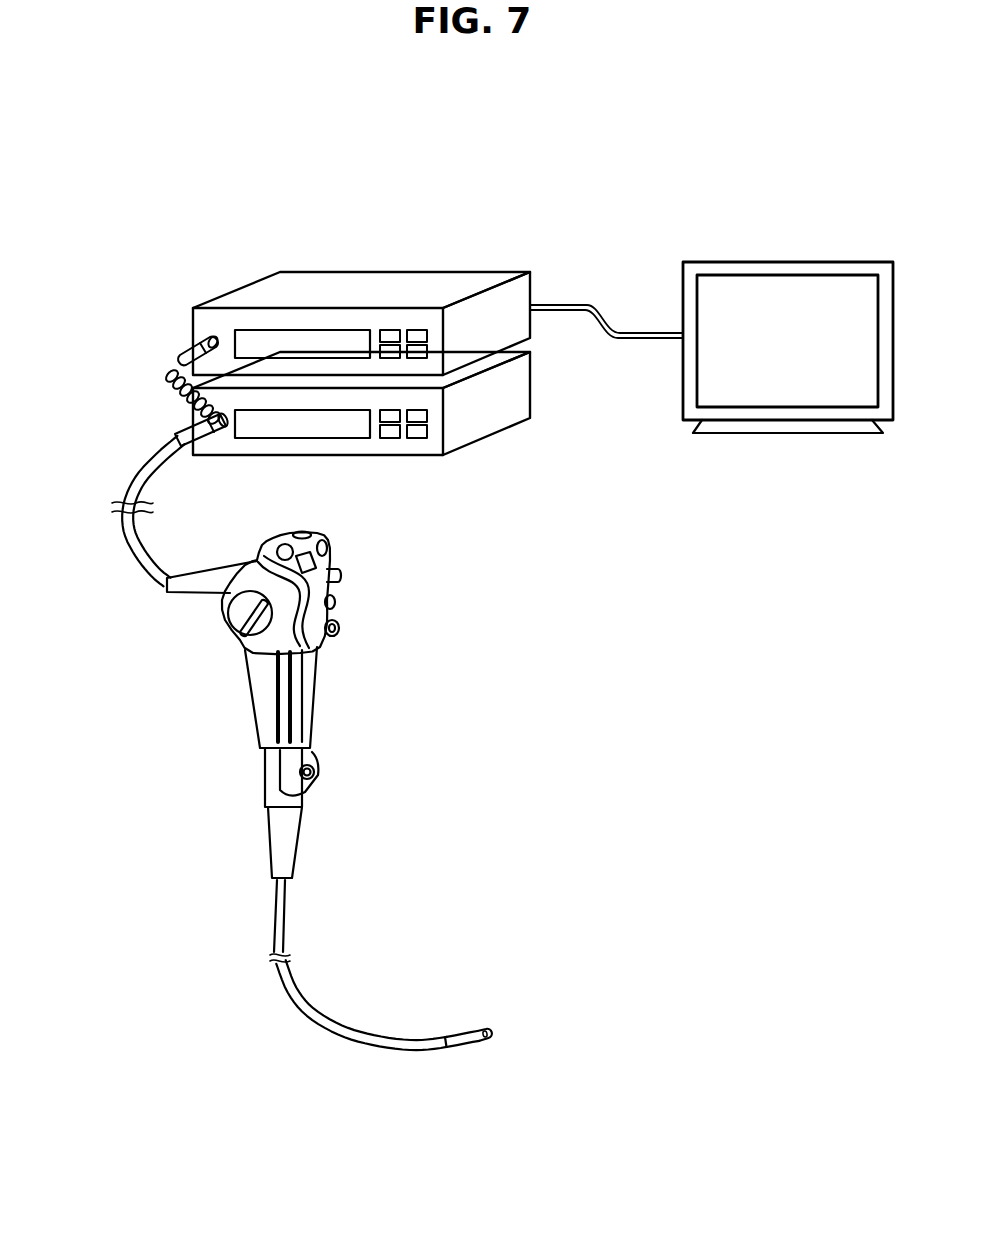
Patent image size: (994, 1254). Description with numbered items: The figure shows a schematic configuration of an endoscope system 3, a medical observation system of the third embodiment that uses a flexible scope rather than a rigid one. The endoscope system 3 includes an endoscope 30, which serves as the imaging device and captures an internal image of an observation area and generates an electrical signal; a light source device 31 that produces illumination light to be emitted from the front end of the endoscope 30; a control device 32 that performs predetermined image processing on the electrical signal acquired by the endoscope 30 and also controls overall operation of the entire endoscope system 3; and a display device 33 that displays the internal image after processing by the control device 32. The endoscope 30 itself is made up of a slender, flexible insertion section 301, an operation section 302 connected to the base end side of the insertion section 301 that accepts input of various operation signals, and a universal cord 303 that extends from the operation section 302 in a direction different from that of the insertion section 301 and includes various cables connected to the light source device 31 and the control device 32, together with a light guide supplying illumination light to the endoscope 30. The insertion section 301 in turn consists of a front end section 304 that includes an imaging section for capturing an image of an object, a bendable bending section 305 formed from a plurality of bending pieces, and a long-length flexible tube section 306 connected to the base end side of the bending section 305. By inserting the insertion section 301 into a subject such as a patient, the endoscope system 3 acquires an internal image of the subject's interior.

The endoscope system 3 is at (827, 196).
The endoscope 30 is at (355, 554).
The light source device 31 is at (518, 387).
The control device 32 is at (497, 277).
The display device 33 is at (790, 268).
The insertion section 301 is at (340, 1016).
The operation section 302 is at (281, 540).
The universal cord 303 is at (127, 537).
The front end section 304 is at (487, 1037).
The bending section 305 is at (462, 1030).
The flexible tube section 306 is at (330, 1023).